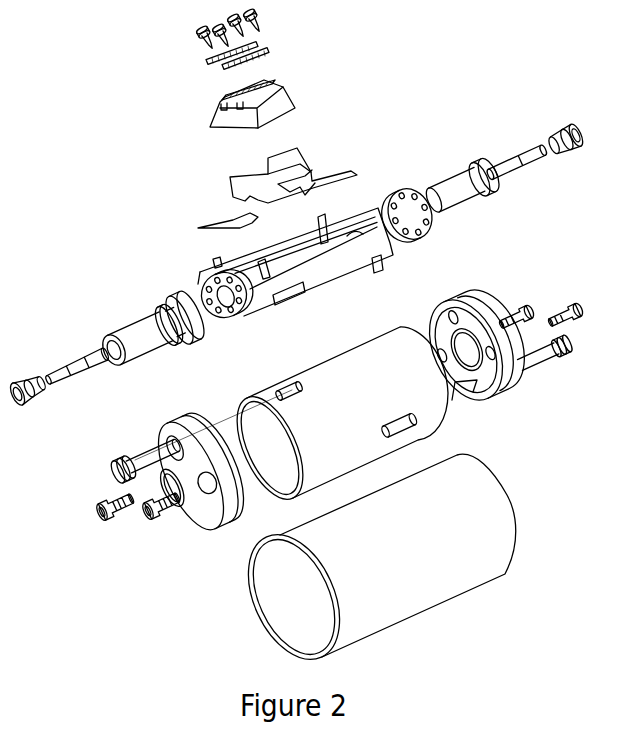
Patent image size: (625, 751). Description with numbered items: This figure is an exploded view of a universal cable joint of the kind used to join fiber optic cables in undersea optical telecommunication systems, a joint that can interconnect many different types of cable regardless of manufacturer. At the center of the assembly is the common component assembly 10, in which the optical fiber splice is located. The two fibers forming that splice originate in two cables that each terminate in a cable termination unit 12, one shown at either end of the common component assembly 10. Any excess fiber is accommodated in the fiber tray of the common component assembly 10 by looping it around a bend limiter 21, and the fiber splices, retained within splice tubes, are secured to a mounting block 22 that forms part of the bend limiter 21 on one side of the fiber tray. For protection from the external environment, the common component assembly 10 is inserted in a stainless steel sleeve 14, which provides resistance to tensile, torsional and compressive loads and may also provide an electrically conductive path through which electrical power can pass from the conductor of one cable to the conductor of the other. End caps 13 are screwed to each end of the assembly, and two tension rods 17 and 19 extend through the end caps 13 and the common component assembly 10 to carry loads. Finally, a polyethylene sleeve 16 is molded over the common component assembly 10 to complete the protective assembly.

The common component assembly 10 is at (373, 205).
The cable termination unit 12 is at (447, 176).
The end cap 13 is at (203, 517).
The stainless steel sleeve 14 is at (373, 402).
The polyethylene sleeve 16 is at (422, 562).
The tension rod 17 is at (143, 449).
The tension rod 19 is at (537, 366).
The bend limiter 21 is at (313, 163).
The mounting block 22 is at (212, 120).